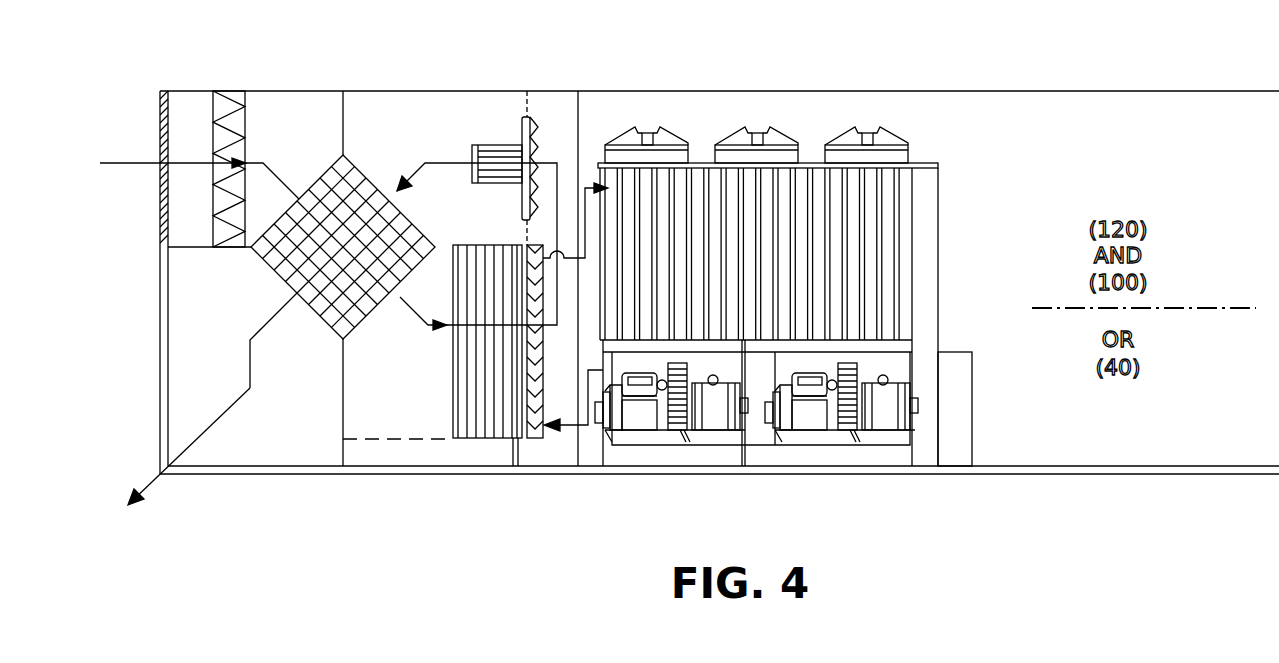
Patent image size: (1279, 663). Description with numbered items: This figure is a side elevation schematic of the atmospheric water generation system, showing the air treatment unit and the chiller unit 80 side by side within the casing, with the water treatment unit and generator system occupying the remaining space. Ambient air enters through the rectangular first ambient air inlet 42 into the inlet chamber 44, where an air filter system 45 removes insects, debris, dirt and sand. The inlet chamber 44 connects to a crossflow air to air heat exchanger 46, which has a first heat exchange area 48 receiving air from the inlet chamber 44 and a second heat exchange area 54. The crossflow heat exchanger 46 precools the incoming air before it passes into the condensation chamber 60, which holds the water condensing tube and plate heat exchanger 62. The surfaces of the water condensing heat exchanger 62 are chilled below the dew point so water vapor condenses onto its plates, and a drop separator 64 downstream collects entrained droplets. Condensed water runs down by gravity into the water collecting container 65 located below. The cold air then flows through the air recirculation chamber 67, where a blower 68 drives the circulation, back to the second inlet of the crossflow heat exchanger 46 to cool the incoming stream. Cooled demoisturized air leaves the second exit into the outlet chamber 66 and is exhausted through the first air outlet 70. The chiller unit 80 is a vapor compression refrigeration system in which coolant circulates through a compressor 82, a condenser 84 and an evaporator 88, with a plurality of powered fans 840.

The first ambient air inlet 42 is at (160, 186).
The inlet chamber 44 is at (274, 139).
The air filter system 45 is at (236, 94).
The crossflow air to air heat exchanger 46 is at (356, 175).
The first heat exchange area 48 is at (310, 258).
The second heat exchange area 54 is at (374, 212).
The condensation chamber 60 is at (386, 405).
The water condensing tube and plate heat exchanger 62 is at (480, 422).
The drop separator 64 is at (541, 438).
The water collecting container 65 is at (390, 453).
The outlet chamber 66 is at (267, 433).
The air recirculation chamber 67 is at (543, 127).
The blower 68 is at (490, 145).
The first air outlet 70 is at (207, 428).
The chiller unit 80 is at (812, 150).
The compressor 82 is at (655, 418).
The condenser 84 is at (900, 192).
The evaporator 88 is at (512, 412).
The powered fans 840 is at (644, 133).